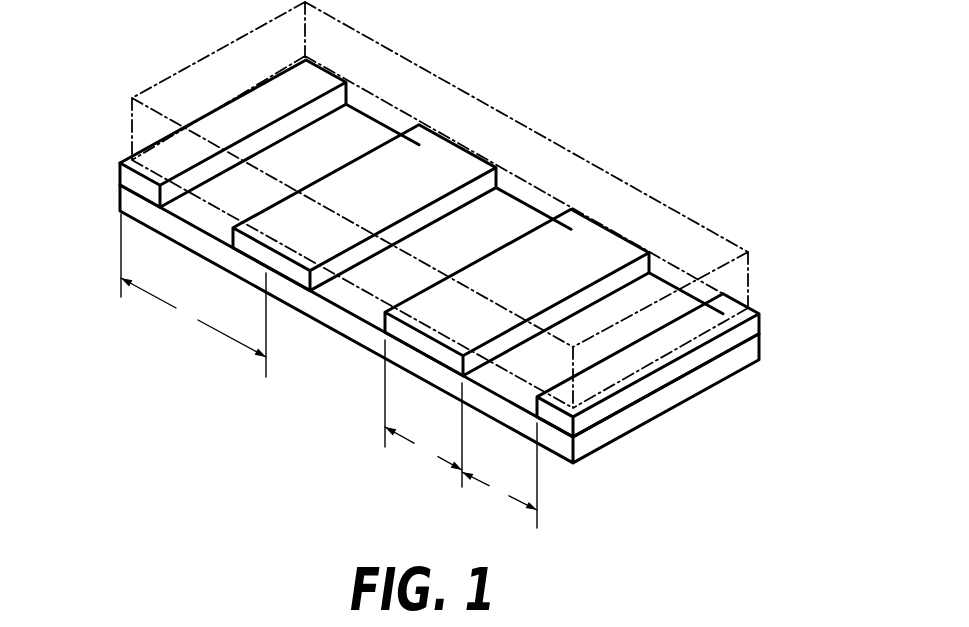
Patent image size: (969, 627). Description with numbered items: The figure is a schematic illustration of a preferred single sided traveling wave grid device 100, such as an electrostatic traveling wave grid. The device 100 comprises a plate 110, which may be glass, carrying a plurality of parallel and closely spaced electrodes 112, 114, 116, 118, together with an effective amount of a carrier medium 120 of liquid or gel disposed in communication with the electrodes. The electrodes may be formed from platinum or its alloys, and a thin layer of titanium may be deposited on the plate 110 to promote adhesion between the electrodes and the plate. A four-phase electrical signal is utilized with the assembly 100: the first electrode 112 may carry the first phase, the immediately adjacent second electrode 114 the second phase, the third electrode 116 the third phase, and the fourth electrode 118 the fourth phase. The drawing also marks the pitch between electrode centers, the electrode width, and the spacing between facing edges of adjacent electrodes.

The single sided traveling wave grid device 100 is at (438, 265).
The plate 110 is at (692, 388).
The first electrode 112 is at (138, 182).
The second electrode 114 is at (292, 270).
The third electrode 116 is at (382, 330).
The fourth electrode 118 is at (585, 432).
The carrier medium 120 is at (753, 270).